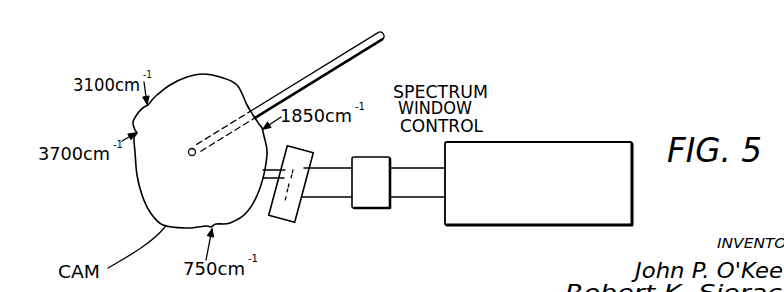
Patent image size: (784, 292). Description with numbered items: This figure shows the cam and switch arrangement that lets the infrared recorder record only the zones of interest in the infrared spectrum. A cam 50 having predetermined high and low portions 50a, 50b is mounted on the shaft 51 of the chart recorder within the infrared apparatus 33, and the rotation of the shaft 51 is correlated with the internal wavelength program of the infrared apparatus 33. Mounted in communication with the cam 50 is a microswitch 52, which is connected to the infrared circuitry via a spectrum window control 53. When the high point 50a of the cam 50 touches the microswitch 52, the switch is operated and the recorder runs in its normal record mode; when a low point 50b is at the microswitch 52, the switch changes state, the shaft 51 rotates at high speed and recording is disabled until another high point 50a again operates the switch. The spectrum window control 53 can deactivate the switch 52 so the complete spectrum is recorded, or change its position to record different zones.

The cam 50 is at (140, 198).
The high portion of cam 50a is at (245, 212).
The low portion of cam 50b is at (205, 73).
The shaft 51 is at (333, 61).
The microswitch 52 is at (303, 149).
The spectrum window control 53 is at (377, 188).
The infrared apparatus 33 is at (538, 183).